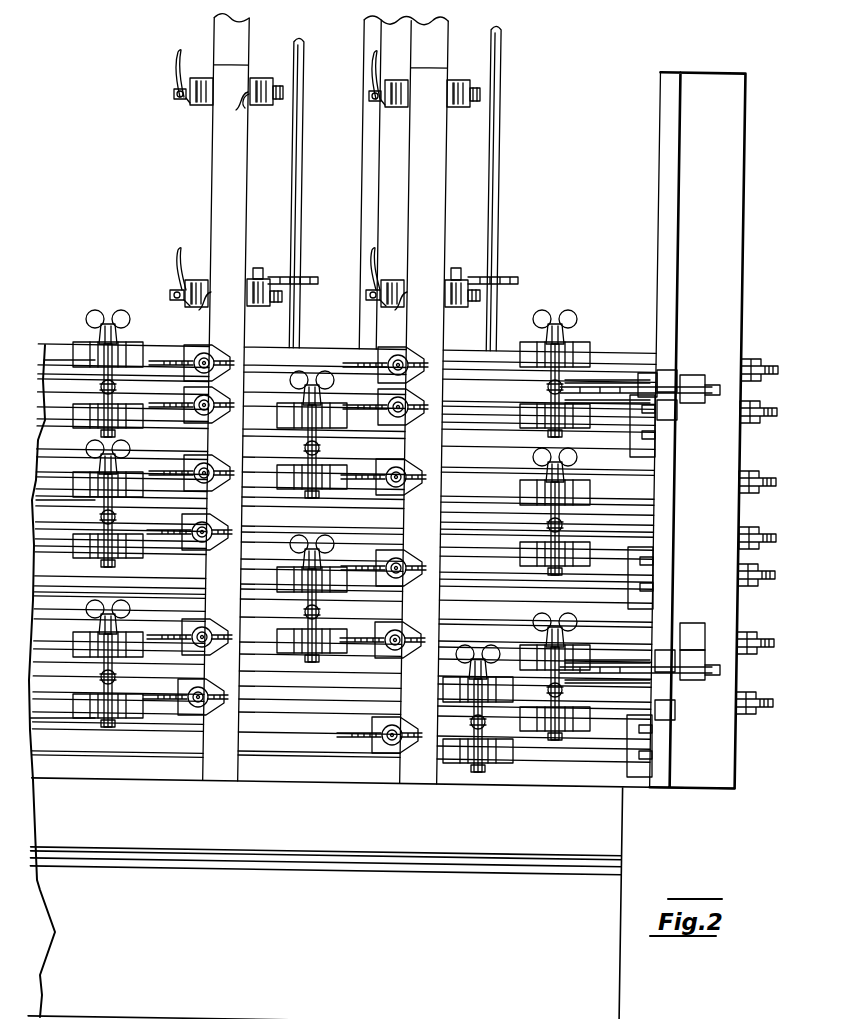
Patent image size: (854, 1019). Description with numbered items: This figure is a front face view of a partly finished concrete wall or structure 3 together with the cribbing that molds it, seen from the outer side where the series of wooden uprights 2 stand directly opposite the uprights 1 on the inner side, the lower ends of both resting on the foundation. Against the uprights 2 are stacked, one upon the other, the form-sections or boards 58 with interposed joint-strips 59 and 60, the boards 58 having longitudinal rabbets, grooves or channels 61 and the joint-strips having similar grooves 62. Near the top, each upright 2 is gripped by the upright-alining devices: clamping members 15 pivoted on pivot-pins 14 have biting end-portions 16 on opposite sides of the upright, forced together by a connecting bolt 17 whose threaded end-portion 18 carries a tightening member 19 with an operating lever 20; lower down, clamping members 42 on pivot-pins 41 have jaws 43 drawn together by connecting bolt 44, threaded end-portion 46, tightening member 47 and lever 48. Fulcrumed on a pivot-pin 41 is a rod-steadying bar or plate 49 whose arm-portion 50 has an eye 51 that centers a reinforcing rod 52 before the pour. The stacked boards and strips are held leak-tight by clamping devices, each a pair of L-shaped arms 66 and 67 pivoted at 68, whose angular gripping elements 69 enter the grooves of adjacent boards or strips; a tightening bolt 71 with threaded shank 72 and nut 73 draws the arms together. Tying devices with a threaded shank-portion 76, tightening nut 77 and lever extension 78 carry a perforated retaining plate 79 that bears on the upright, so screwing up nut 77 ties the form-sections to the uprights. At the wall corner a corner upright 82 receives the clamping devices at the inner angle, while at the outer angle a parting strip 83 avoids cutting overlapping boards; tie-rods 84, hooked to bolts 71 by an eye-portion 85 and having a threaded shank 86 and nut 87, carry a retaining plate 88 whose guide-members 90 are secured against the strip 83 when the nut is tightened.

The uprights 1 is at (440, 30).
The uprights 2 is at (213, 181).
The wall or structure 3 is at (602, 887).
The pivot-pins 14 is at (203, 78).
The vise or clamping members 15 is at (200, 105).
The clamping or biting end-portions 16 is at (238, 108).
The connecting bolt 17 is at (278, 99).
The screw-threaded end-portion 18 is at (174, 97).
The tightening member 19 is at (188, 100).
The operating lever 20 is at (176, 62).
The pivot-pins 41 is at (197, 280).
The vise or clamping members 42 is at (196, 306).
The clamping or biting end-portions 43 is at (215, 306).
The connecting bolt 44 is at (282, 297).
The screw-threaded end-portion 46 is at (170, 293).
The tightening member 47 is at (184, 300).
The operating lever 48 is at (176, 256).
The rod-steadying bar or plate 49 is at (246, 282).
The arm-portion 50 is at (275, 279).
The eye 51 is at (312, 284).
The reinforcing rod 52 is at (303, 170).
The form-sections or boards 58 is at (60, 630).
The joint-strip 59 is at (60, 505).
The joint-strip 60 is at (100, 340).
The rabbets, grooves, or channels 61 is at (60, 567).
The rabbets, grooves, or channels 62 is at (70, 365).
The L-shaped member or arm 66 is at (75, 345).
The L-shaped member or arm 67 is at (75, 410).
The pivotal connection 68 is at (75, 395).
The gripping elements 69 is at (85, 380).
The tightening bolt 71 is at (75, 440).
The screw-threaded shank-portion 72 is at (108, 318).
The tightening nut 73 is at (95, 318).
The screw-threaded shank-portion 76 is at (200, 403).
The tightening nut 77 is at (195, 415).
The extension or lever 78 is at (170, 375).
The plate 79 is at (195, 345).
The corner upright 82 is at (366, 205).
The parting strip 83 is at (660, 252).
The tie-rod 84 is at (590, 385).
The hook-shaped or eye-portion 85 is at (580, 380).
The screw-threaded shank-portion 86 is at (645, 378).
The tightening nut 87 is at (708, 395).
The plate 88 is at (690, 378).
The guide-members 90 is at (672, 370).